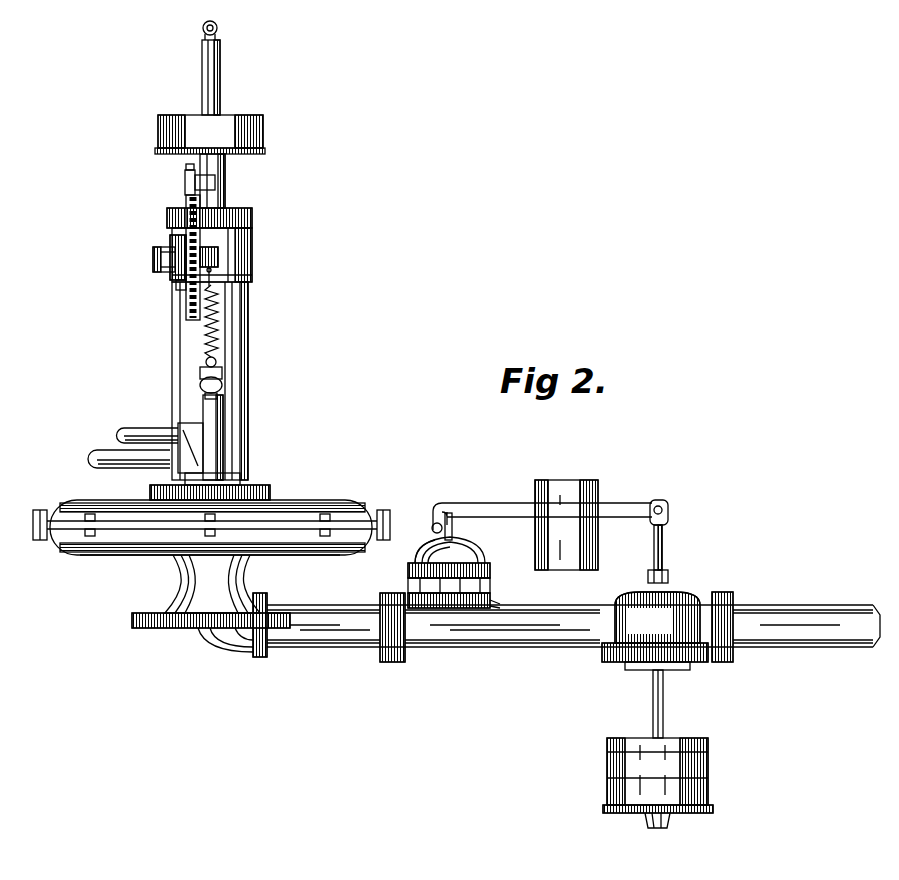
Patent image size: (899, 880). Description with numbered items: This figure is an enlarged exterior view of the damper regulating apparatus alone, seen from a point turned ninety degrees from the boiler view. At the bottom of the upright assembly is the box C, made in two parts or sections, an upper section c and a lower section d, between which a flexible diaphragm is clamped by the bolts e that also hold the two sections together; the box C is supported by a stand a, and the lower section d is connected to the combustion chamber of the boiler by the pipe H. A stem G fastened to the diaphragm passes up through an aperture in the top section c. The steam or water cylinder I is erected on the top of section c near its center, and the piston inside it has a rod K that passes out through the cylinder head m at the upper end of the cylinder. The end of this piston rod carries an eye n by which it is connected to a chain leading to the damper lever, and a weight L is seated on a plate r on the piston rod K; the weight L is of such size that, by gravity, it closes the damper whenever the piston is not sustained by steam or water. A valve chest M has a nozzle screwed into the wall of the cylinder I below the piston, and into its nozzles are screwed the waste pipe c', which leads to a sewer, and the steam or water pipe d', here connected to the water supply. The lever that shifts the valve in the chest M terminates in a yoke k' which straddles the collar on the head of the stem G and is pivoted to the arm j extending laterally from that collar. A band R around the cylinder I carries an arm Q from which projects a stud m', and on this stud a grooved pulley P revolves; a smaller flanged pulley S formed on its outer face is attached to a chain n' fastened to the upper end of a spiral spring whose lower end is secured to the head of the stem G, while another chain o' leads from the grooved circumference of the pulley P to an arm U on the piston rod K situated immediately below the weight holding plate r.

The eye n is at (220, 29).
The piston rod K is at (222, 86).
The weight L is at (210, 134).
The plate r is at (227, 192).
The arm U is at (216, 186).
The cylinder head m is at (225, 213).
The arm Q is at (168, 244).
The flanged pulley S is at (254, 240).
The stud m' is at (147, 261).
The band R is at (219, 256).
The chain n' is at (248, 280).
The chain o' is at (160, 294).
The grooved pulley P is at (185, 306).
The steam or water cylinder I is at (248, 336).
The arm j is at (240, 370).
The yoke k' is at (238, 383).
The stem G is at (240, 432).
The valve chest M is at (186, 426).
The waste pipe c' is at (143, 416).
The steam or water pipe d' is at (114, 464).
The top section c is at (191, 496).
The box C is at (198, 527).
The bolts e is at (47, 549).
The lower section d is at (210, 570).
The stand a is at (211, 591).
The pipe H is at (336, 616).